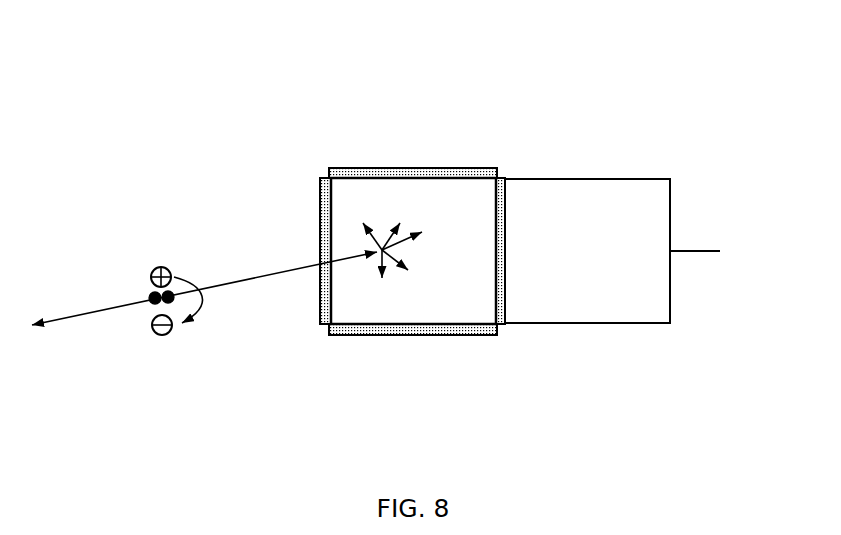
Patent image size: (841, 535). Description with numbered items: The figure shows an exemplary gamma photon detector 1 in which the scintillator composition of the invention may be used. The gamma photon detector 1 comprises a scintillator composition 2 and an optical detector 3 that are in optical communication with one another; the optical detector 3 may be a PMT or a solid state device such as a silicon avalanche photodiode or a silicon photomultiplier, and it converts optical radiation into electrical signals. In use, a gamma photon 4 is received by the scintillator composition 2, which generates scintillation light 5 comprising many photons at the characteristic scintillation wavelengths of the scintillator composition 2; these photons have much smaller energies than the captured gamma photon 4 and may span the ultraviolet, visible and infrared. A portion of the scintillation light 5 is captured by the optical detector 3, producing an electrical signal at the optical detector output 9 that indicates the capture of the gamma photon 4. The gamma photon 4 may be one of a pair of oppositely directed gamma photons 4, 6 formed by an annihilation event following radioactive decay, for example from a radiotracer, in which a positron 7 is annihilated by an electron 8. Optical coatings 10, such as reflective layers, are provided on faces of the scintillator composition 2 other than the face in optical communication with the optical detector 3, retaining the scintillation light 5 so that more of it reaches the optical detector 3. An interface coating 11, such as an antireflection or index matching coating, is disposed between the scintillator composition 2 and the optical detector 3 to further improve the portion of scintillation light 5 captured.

The gamma photon detector 1 is at (698, 117).
The scintillator composition 2 is at (392, 210).
The optical detector 3 is at (582, 215).
The gamma photon 4 is at (195, 294).
The scintillation light 5 is at (392, 279).
The gamma photon 6 is at (133, 293).
The positron 7 is at (170, 263).
The electron 8 is at (157, 340).
The optical detector output 9 is at (695, 248).
The optical coatings 10 is at (350, 175).
The interface coating 11 is at (498, 220).